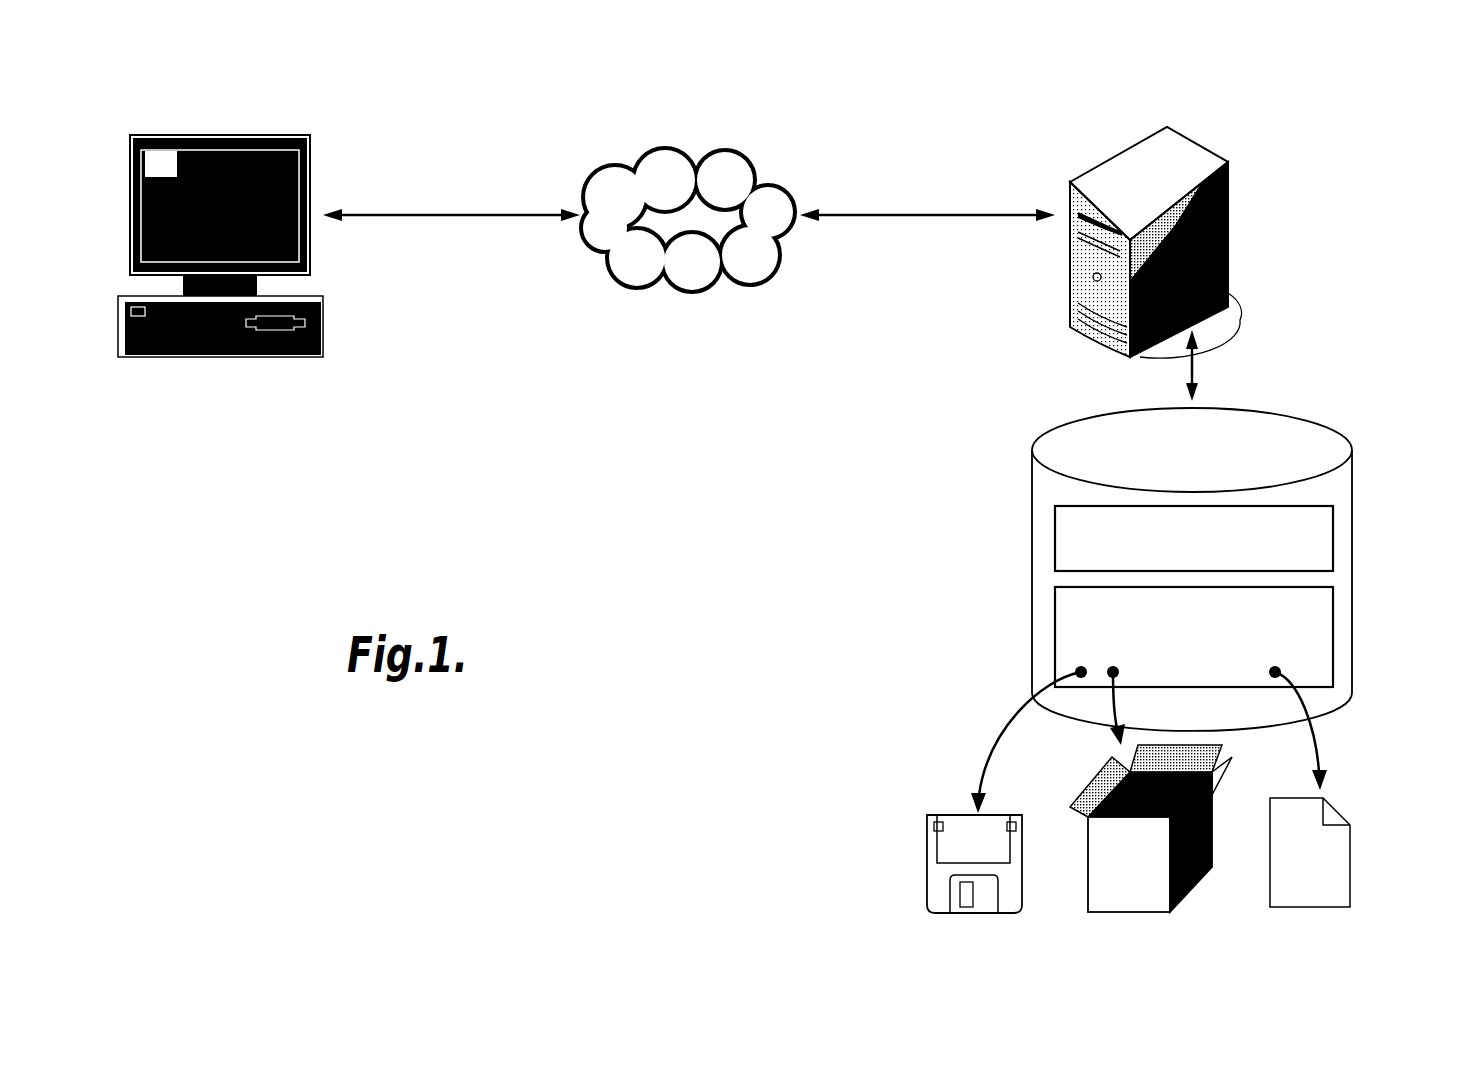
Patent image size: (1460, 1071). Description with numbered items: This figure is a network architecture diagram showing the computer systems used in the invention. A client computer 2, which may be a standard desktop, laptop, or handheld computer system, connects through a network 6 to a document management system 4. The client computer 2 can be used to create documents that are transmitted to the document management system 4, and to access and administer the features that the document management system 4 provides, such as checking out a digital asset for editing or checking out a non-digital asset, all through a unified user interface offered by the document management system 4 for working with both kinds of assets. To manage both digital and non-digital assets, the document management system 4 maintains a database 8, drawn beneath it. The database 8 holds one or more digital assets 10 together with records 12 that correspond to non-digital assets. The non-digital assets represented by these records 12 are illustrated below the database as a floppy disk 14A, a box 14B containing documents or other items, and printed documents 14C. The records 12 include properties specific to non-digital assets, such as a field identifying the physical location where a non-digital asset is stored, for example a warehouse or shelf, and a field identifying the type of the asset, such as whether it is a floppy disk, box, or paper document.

The client computer 2 is at (303, 181).
The document management system 4 is at (1217, 210).
The network 6 is at (645, 256).
The database 8 is at (1040, 477).
The digital assets 10 is at (1320, 549).
The records 12 is at (1318, 647).
The floppy disk 14A is at (930, 823).
The box 14B is at (1102, 888).
The printed documents 14C is at (1335, 855).